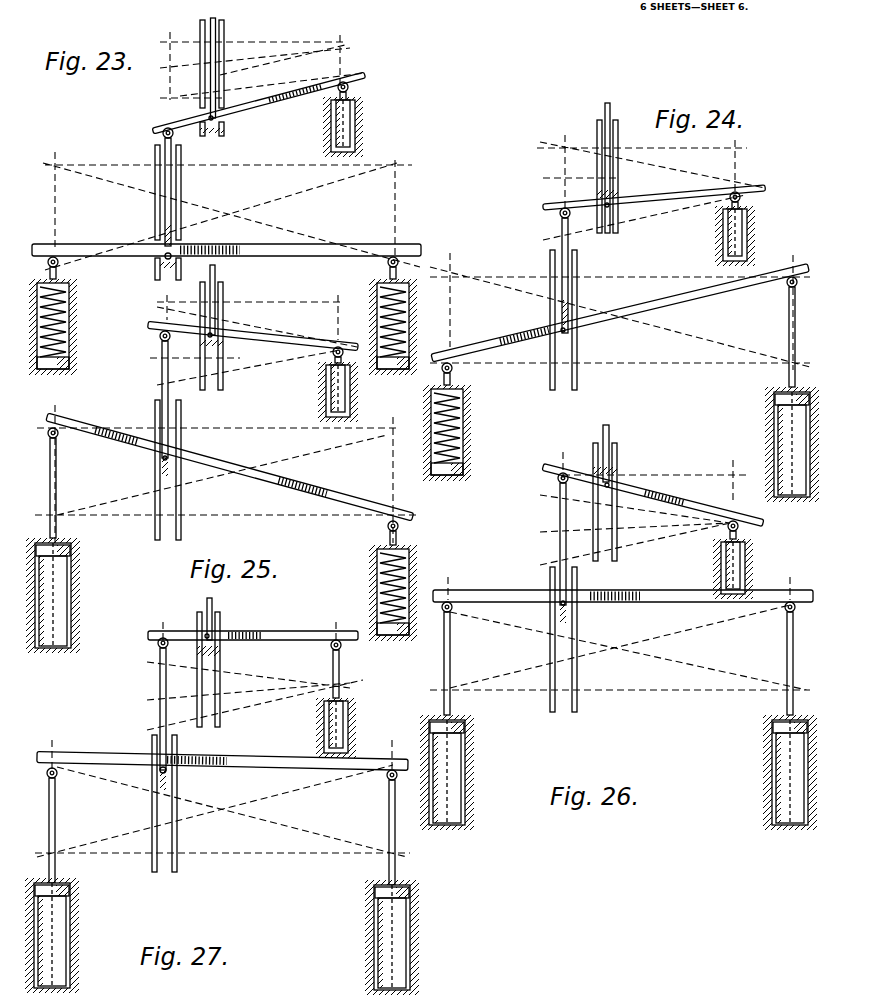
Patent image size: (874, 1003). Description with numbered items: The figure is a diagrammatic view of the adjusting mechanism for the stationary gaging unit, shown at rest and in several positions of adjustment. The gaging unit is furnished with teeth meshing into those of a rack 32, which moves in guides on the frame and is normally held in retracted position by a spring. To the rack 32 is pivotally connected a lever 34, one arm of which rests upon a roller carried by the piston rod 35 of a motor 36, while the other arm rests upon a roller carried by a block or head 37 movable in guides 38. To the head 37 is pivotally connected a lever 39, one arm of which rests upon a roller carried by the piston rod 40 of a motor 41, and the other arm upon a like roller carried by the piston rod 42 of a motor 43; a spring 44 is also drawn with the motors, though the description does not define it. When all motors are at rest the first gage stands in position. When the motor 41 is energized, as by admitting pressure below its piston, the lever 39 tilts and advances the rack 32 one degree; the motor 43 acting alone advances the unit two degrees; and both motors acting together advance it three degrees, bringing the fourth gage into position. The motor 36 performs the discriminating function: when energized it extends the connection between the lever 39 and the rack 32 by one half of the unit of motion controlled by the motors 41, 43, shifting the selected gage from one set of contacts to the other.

In FIG. 23, the rack 32 is at (217, 19).
In FIG. 24, the rack 32 is at (610, 104).
In FIG. 26, the rack 32 is at (610, 430).
In FIG. 27, the rack 32 is at (213, 609).
In FIG. 23, the lever 34 is at (253, 106).
In FIG. 24, the lever 34 is at (660, 198).
In FIG. 25, the lever 34 is at (263, 344).
In FIG. 26, the lever 34 is at (669, 497).
In FIG. 27, the lever 34 is at (276, 641).
In FIG. 23, the piston rod 35 is at (350, 93).
In FIG. 24, the piston rod 35 is at (748, 210).
In FIG. 23, the motor 36 is at (357, 127).
In FIG. 24, the motor 36 is at (748, 236).
In FIG. 23, the block or head 37 is at (173, 249).
In FIG. 27, the block or head 37 is at (172, 773).
In FIG. 23, the guides 38 is at (166, 210).
In FIG. 23, the lever 39 is at (288, 253).
In FIG. 25, the lever 39 is at (265, 481).
In FIG. 26, the lever 39 is at (636, 591).
In FIG. 27, the lever 39 is at (256, 760).
In FIG. 23, the piston rod 40 is at (388, 266).
In FIG. 23, the motor 41 is at (378, 320).
In FIG. 23, the piston rod 42 is at (60, 266).
In FIG. 23, the motor 43 is at (68, 327).
In FIG. 23, the spring 44 is at (70, 309).